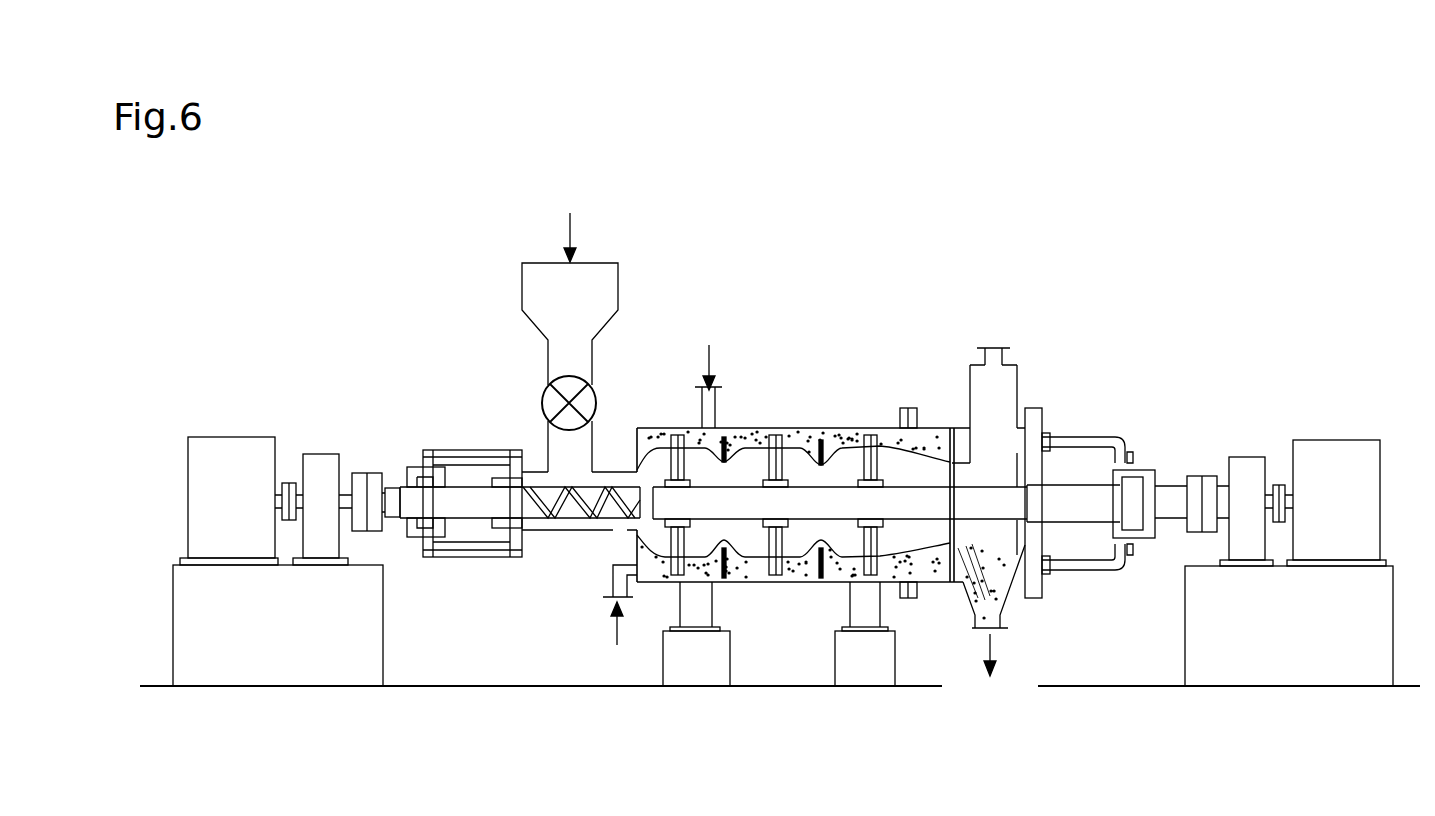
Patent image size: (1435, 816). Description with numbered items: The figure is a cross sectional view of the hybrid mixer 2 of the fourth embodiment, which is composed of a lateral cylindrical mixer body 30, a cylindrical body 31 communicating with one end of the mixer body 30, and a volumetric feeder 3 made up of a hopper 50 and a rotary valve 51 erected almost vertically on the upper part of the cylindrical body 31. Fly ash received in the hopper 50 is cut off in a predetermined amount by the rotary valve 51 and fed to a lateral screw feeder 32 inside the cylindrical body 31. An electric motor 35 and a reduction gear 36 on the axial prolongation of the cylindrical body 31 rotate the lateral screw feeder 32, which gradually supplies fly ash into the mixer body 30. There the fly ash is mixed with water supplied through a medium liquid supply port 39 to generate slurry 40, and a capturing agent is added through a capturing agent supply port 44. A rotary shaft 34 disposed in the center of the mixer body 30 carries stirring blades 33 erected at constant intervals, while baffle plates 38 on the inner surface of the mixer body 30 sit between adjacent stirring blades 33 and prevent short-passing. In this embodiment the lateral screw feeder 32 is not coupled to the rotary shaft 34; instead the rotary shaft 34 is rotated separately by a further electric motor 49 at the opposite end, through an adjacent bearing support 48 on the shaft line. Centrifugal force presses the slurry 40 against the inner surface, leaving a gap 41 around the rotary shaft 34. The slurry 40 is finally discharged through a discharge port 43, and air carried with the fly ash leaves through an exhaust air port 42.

The hybrid mixer 2 is at (911, 214).
The volumetric feeder 3 is at (400, 255).
The mixer body 30 is at (640, 427).
The cylindrical body 31 is at (552, 533).
The lateral screw feeder 32 is at (608, 532).
The stirring blades 33 is at (788, 458).
The rotary shaft 34 is at (835, 485).
The electric motor 35 is at (236, 437).
The reduction gear 36 is at (318, 454).
The baffle plates 38 is at (735, 440).
The medium liquid supply port 39 is at (611, 577).
The slurry 40 is at (688, 428).
The gap 41 is at (750, 547).
The exhaust air port 42 is at (1017, 375).
The discharge port 43 is at (1003, 617).
The capturing agent supply port 44 is at (720, 420).
The bearing unit 48 is at (1248, 455).
The electric motor 49 is at (1340, 440).
The hopper 50 is at (522, 290).
The rotary valve 51 is at (546, 392).